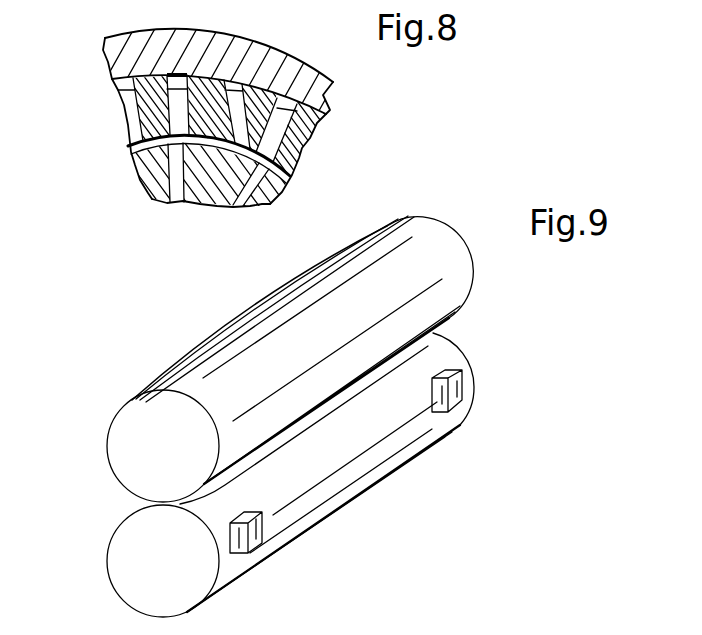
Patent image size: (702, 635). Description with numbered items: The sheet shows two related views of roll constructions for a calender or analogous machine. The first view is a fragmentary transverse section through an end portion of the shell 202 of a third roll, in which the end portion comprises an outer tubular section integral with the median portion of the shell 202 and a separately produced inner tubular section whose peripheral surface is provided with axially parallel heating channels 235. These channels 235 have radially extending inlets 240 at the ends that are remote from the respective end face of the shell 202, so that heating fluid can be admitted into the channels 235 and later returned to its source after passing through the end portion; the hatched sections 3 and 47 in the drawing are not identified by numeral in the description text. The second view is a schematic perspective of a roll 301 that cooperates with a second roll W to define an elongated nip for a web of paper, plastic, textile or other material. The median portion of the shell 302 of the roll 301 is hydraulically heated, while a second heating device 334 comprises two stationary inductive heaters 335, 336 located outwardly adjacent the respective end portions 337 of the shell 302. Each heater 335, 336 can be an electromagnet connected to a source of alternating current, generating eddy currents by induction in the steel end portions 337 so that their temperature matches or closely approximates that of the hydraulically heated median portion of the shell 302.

In FIG. 8, the ring body 3 is at (203, 188).
In FIG. 8, the radial strip 47 is at (236, 205).
In FIG. 8, the shell 202 is at (313, 97).
In FIG. 8, the heating channels 235 is at (292, 104).
In FIG. 8, the inlets 240 is at (277, 133).
In FIG. 9, the second roll W is at (445, 252).
In FIG. 9, the end portions 337 is at (440, 357).
In FIG. 9, the inductive heater 336 is at (458, 395).
In FIG. 9, the inductive heater 335 is at (242, 540).
In FIG. 9, the second heating device 334 is at (268, 552).
In FIG. 9, the roll 301 is at (383, 450).
In FIG. 9, the shell 302 is at (333, 497).